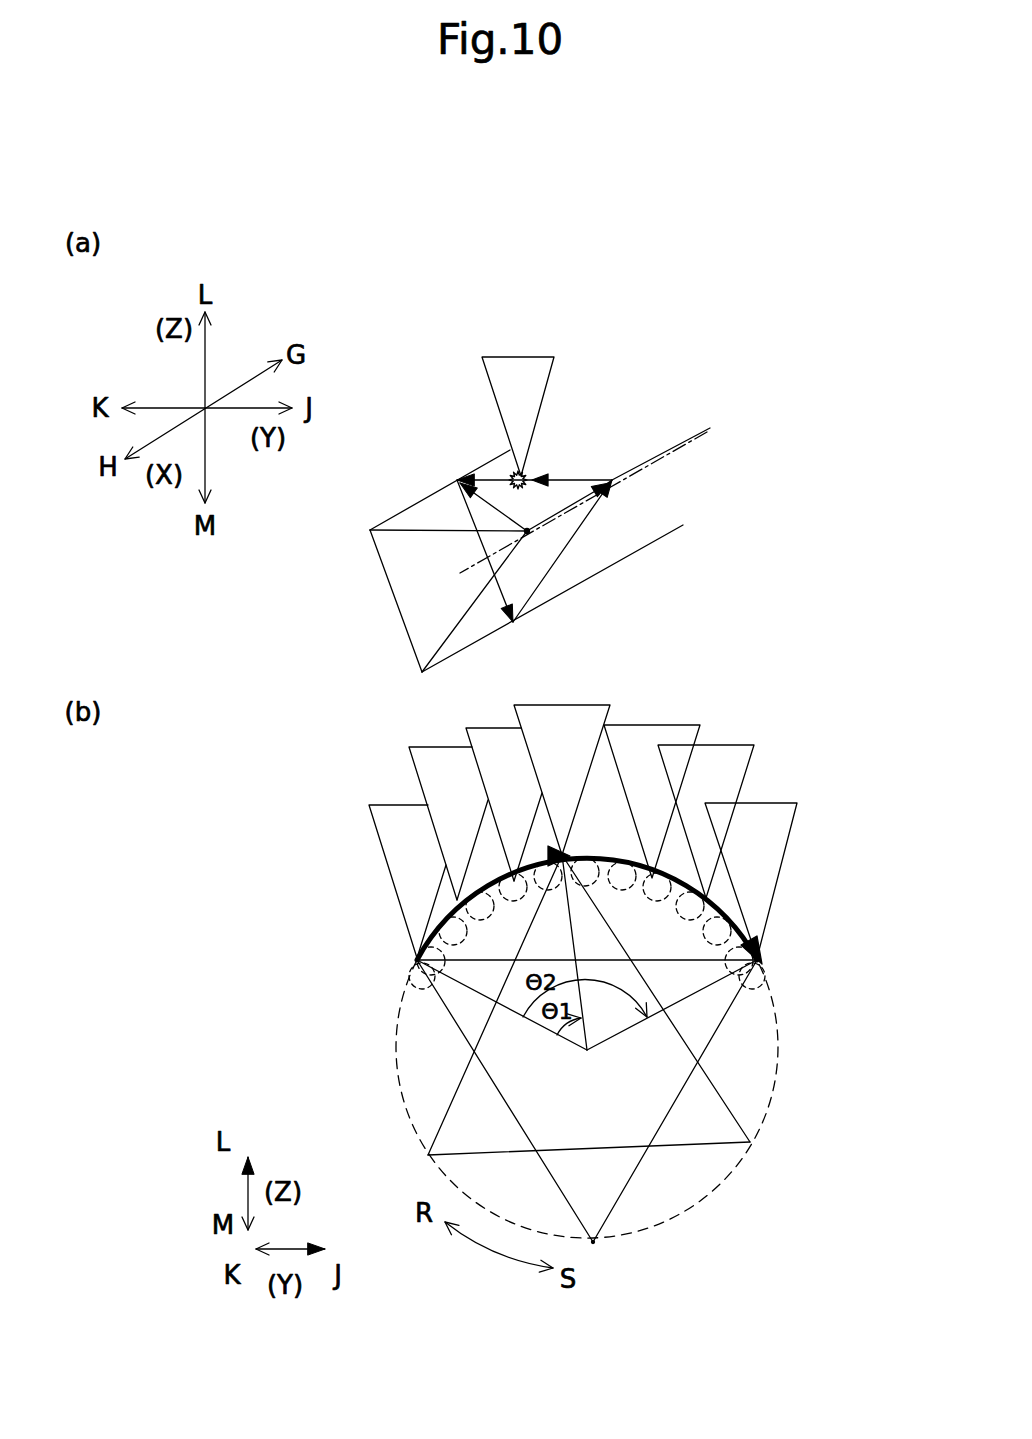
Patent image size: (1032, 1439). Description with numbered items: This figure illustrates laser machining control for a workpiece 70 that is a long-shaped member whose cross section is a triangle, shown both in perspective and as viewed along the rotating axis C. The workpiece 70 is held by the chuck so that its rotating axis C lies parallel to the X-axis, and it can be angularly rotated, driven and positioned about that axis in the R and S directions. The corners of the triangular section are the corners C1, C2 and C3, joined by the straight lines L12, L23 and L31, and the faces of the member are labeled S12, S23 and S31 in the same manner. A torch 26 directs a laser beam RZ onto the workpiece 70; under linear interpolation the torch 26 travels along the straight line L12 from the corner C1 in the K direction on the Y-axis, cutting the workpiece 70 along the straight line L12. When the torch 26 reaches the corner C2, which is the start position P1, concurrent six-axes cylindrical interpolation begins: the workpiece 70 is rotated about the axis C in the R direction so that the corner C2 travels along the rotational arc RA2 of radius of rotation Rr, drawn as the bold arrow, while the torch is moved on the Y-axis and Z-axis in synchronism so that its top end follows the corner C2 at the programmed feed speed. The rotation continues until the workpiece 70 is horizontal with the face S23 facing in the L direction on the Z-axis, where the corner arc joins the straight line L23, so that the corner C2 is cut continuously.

The torch 26 is at (533, 358).
The workpiece 70 is at (430, 352).
The straight line L12 is at (552, 480).
The straight line L23 is at (462, 508).
The edge line between faces S31 and S12 L31 is at (548, 567).
The prism face S12 is at (597, 462).
The face S23 is at (425, 591).
The prism face S31 is at (613, 541).
The rotating axis C is at (712, 430).
The corner C1 is at (613, 481).
The corner C2 is at (457, 478).
The corner C3 is at (515, 624).
The laser beam RZ is at (516, 472).
The radius of rotation Rr is at (534, 773).
The start position P1 is at (566, 855).
The rotational arc RA2 is at (443, 918).